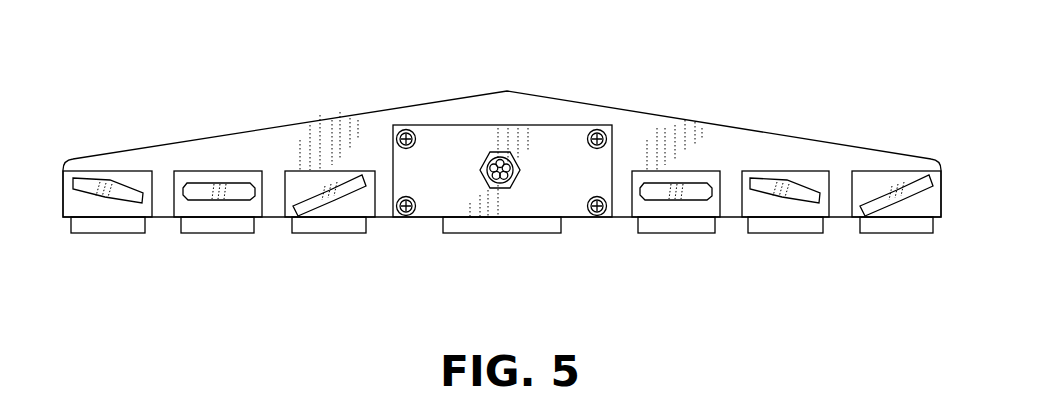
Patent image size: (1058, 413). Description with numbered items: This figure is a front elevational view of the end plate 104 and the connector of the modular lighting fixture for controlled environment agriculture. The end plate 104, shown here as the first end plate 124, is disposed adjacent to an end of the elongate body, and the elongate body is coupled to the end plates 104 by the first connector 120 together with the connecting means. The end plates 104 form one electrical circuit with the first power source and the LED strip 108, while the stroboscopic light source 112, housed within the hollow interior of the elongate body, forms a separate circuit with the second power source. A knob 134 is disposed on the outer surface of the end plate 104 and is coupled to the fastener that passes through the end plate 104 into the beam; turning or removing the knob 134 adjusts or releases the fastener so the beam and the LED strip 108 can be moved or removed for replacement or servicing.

The end plate 104 is at (505, 107).
The LED strip 108 is at (222, 228).
The stroboscopic light source 112 is at (542, 227).
The first connector 120 is at (497, 189).
The first end plate 124 is at (648, 130).
The knob 134 is at (207, 187).